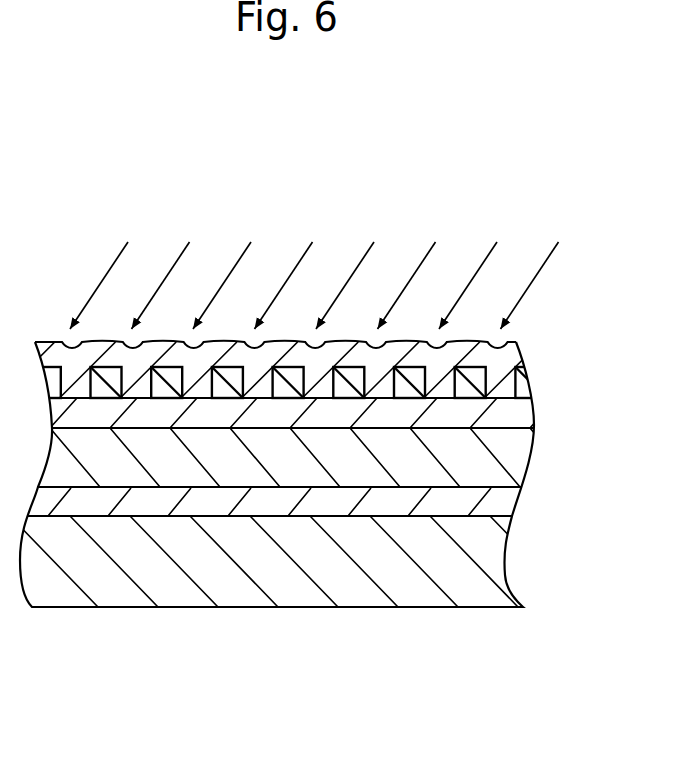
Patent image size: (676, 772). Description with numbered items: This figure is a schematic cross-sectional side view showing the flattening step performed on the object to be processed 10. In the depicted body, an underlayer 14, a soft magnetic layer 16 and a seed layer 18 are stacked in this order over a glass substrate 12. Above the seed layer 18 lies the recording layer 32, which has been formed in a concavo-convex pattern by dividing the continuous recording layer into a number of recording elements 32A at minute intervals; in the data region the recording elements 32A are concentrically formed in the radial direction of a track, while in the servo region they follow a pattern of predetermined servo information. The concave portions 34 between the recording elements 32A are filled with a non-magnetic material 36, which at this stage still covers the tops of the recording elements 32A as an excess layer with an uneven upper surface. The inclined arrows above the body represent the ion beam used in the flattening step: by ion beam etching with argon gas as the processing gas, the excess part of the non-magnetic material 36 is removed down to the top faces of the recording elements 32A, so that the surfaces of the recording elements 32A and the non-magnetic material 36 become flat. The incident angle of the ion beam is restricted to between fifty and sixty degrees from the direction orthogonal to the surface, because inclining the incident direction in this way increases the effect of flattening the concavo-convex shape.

The object to be processed 10 is at (312, 151).
The glass substrate 12 is at (507, 560).
The underlayer 14 is at (522, 502).
The soft magnetic layer 16 is at (532, 458).
The seed layer 18 is at (535, 413).
The recording layer 32 is at (338, 339).
The recording elements 32A is at (411, 372).
The concave portions 34 is at (376, 368).
The non-magnetic material 36 is at (522, 356).